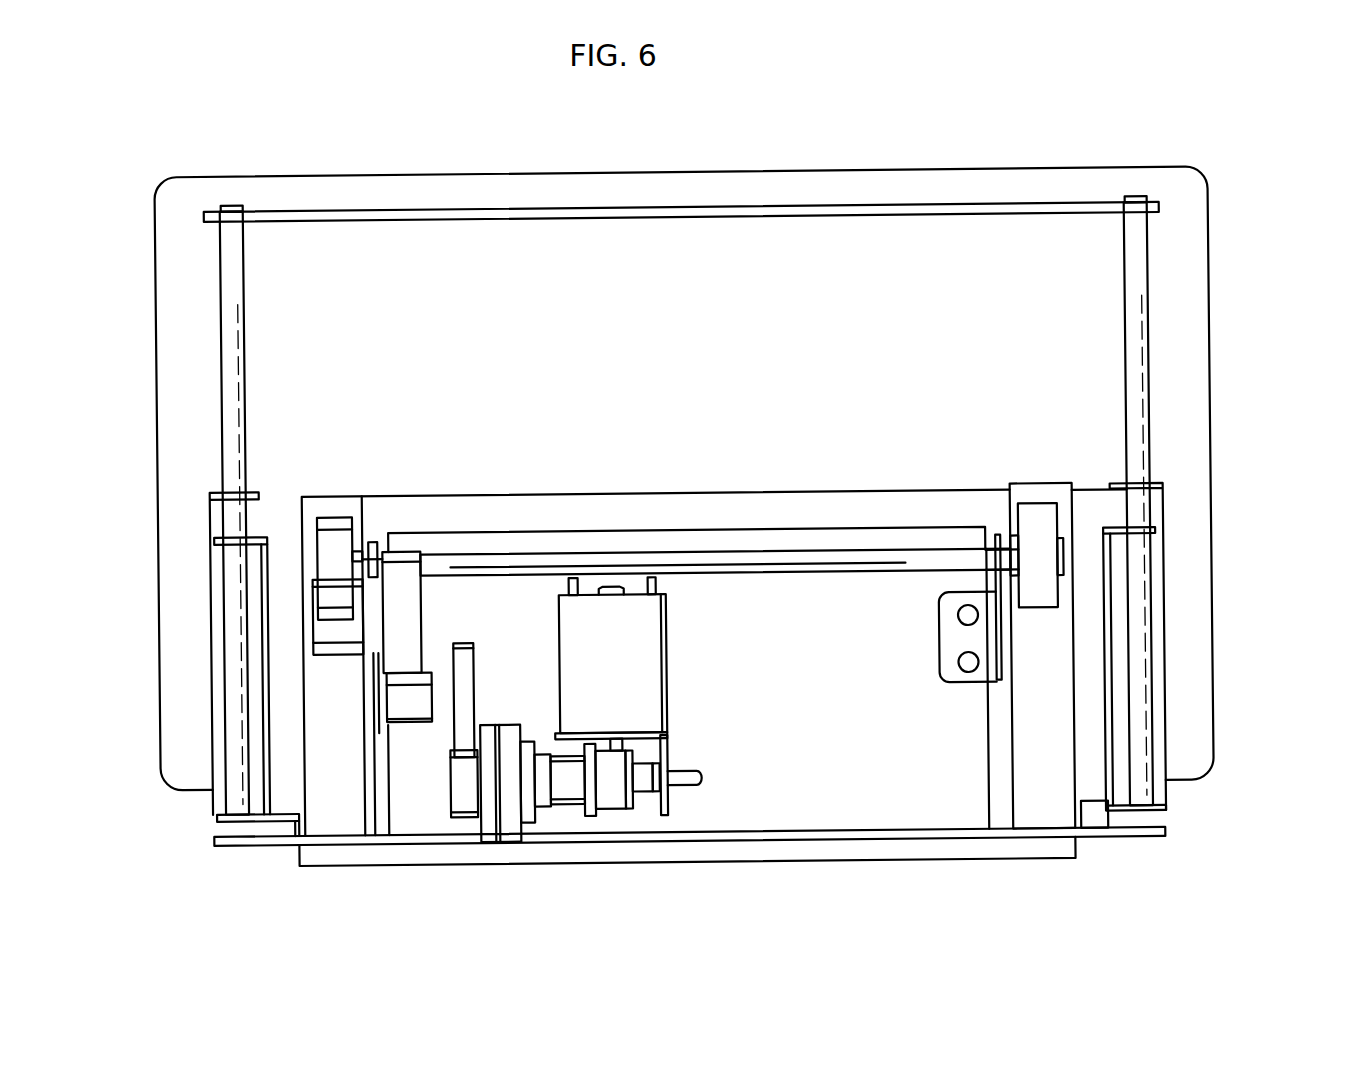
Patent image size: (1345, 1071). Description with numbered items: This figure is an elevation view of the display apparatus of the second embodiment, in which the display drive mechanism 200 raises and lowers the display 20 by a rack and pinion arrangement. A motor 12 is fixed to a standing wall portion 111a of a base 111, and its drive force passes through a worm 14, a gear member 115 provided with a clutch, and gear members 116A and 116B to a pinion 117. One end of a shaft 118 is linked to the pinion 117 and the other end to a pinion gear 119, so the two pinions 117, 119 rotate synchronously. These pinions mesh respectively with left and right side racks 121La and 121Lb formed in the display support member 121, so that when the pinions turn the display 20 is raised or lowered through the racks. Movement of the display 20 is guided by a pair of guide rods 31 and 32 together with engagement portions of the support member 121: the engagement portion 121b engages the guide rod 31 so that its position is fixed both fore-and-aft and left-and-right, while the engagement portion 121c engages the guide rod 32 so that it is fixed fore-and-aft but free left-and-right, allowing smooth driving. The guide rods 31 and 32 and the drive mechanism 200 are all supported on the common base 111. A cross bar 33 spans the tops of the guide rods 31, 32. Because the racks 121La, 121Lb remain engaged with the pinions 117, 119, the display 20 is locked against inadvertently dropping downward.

The display 20 is at (1213, 327).
The guide rod 31 is at (240, 363).
The guide rod 32 is at (1128, 350).
The cross bar 33 is at (748, 208).
The display support member 121 is at (612, 494).
The engagement portion 121b is at (258, 490).
The engagement portion 121c is at (1165, 493).
The left side rack 121La is at (363, 497).
The right side rack 121Lb is at (1022, 491).
The pinion 117 is at (338, 513).
The shaft 118 is at (728, 557).
The standing wall portion 111a is at (860, 532).
The pinion gear 119 is at (1043, 519).
The gear member 116A is at (467, 662).
The gear member 116B is at (422, 616).
The gear member 115 is at (506, 727).
The worm 14 is at (617, 800).
The motor 12 is at (660, 667).
The base 111 is at (812, 836).
The display drive mechanism 200 is at (553, 877).